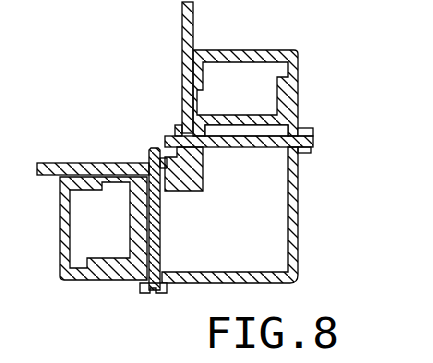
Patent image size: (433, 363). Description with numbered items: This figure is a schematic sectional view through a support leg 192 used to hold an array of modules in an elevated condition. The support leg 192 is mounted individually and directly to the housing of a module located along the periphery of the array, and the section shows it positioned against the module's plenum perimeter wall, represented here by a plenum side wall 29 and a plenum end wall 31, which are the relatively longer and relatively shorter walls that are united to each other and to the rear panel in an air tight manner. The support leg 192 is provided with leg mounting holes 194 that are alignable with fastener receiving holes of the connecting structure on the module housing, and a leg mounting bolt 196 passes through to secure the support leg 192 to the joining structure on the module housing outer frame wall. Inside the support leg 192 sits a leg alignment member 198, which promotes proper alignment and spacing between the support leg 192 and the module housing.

The plenum side wall 29 is at (50, 176).
The plenum end wall 31 is at (193, 20).
The support leg 192 is at (298, 218).
The leg mounting hole 194 is at (290, 158).
The leg mounting bolt 196 is at (312, 148).
The leg alignment member 198 is at (176, 192).